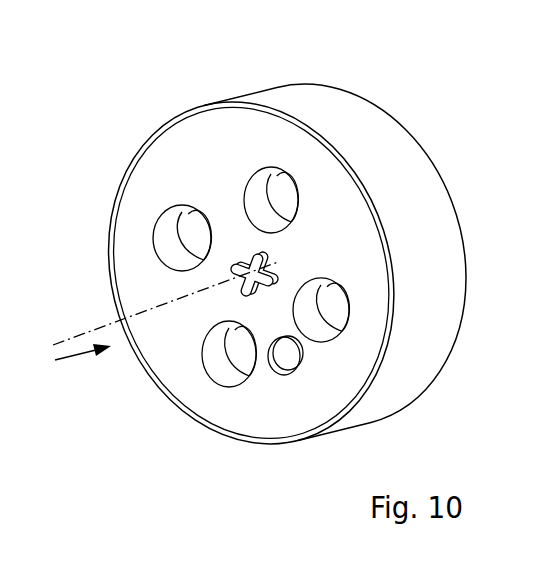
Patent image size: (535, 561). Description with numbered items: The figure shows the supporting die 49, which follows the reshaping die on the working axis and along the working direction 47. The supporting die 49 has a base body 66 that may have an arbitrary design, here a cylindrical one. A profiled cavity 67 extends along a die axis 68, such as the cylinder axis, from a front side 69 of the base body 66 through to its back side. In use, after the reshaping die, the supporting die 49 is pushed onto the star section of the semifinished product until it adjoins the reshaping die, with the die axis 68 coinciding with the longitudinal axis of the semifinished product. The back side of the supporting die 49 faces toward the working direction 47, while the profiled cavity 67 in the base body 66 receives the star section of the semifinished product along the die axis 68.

The supporting die 49 is at (120, 82).
The base body 66 is at (310, 170).
The front side 69 is at (159, 338).
The profiled cavity 67 is at (244, 311).
The die axis 68 is at (108, 325).
The working direction 47 is at (73, 352).